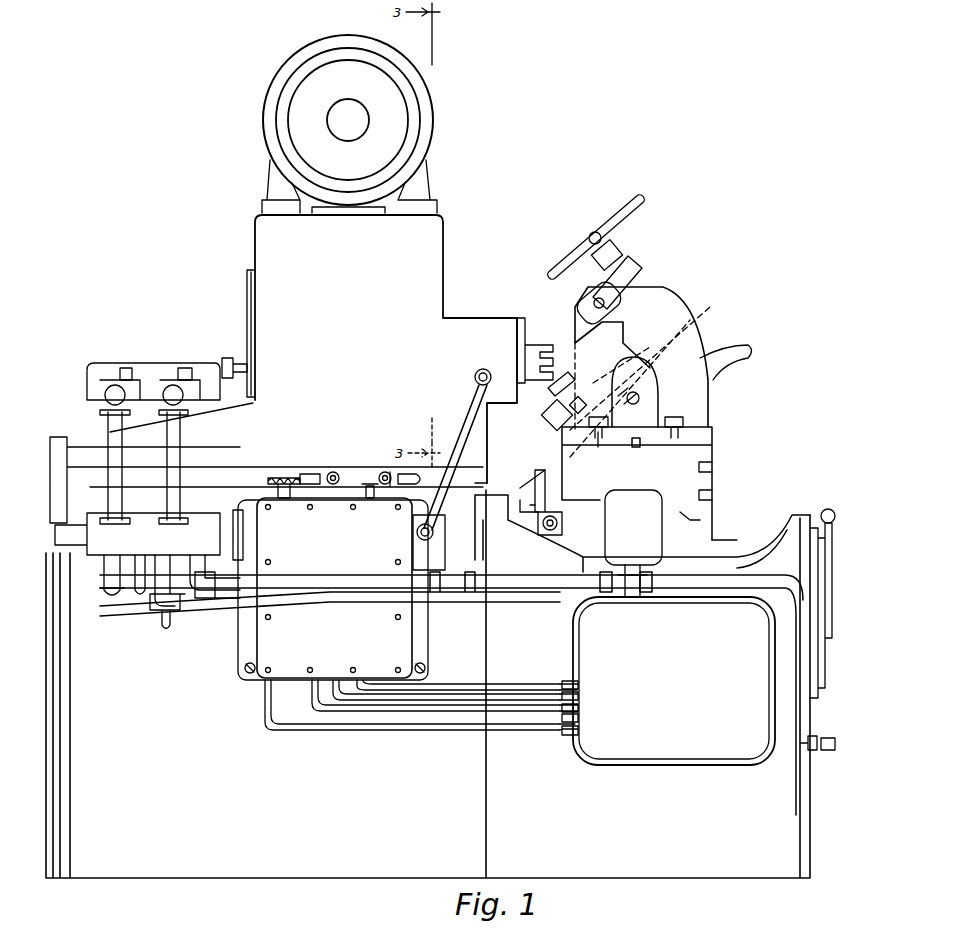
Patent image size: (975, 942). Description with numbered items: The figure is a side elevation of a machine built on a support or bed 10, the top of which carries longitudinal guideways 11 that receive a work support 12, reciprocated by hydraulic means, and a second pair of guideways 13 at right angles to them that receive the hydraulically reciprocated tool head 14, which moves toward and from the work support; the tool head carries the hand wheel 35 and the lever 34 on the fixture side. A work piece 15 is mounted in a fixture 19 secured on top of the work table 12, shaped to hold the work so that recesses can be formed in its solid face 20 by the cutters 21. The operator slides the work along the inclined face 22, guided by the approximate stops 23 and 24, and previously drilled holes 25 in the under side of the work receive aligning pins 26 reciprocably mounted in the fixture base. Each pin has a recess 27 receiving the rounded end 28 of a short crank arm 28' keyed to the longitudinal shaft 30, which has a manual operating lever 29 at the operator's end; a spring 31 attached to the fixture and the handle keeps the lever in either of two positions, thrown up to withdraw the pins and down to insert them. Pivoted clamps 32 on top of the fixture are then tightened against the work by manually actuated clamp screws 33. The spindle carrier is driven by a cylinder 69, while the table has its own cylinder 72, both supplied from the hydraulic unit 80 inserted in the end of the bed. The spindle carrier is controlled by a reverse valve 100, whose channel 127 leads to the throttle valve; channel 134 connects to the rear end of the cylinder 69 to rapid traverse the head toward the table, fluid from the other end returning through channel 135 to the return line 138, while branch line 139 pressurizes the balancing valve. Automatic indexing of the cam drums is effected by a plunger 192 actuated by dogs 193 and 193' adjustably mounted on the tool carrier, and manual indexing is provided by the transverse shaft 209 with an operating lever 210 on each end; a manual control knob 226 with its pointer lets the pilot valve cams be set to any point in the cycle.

The support or bed 10 is at (428, 684).
The longitudinal guideways 11 is at (692, 520).
The work support 12 is at (713, 485).
The second pair of guideways 13 is at (480, 476).
The tool head 14 is at (262, 247).
The work piece 15 is at (577, 353).
The fixture 19 is at (704, 418).
The solid face 20 is at (562, 381).
The cutters 21 is at (543, 347).
The inclined face 22 is at (638, 373).
The approximate stop 23 is at (548, 405).
The approximate stop 24 is at (563, 450).
The previously drilled holes 25 is at (610, 382).
The aligning pins 26 is at (598, 447).
The recess 27 is at (614, 370).
The rounded end 28 is at (666, 403).
The short crank arm 28' is at (679, 366).
The manual operating lever 29 is at (716, 355).
The longitudinal shaft 30 is at (668, 398).
The spring 31 is at (664, 392).
The pivoted clamps 32 is at (632, 273).
The clamp screws 33 is at (616, 264).
The hand lever 34 is at (644, 200).
The hand wheel 35 is at (276, 82).
The cylinder 69 is at (147, 390).
The cylinder 72 is at (656, 550).
The hydraulic unit 80 is at (700, 752).
The reverse valve 100 is at (117, 552).
The channel 127 is at (104, 610).
The channel 134 is at (117, 460).
The channel 135 is at (177, 456).
The return line 138 is at (157, 634).
The branch line 139 is at (215, 608).
The plunger 192 is at (368, 478).
The dog 193 is at (386, 457).
The dog 193' is at (317, 463).
The shaft 209 is at (418, 536).
The operating lever 210 is at (468, 412).
The manual control knob 226 is at (277, 478).